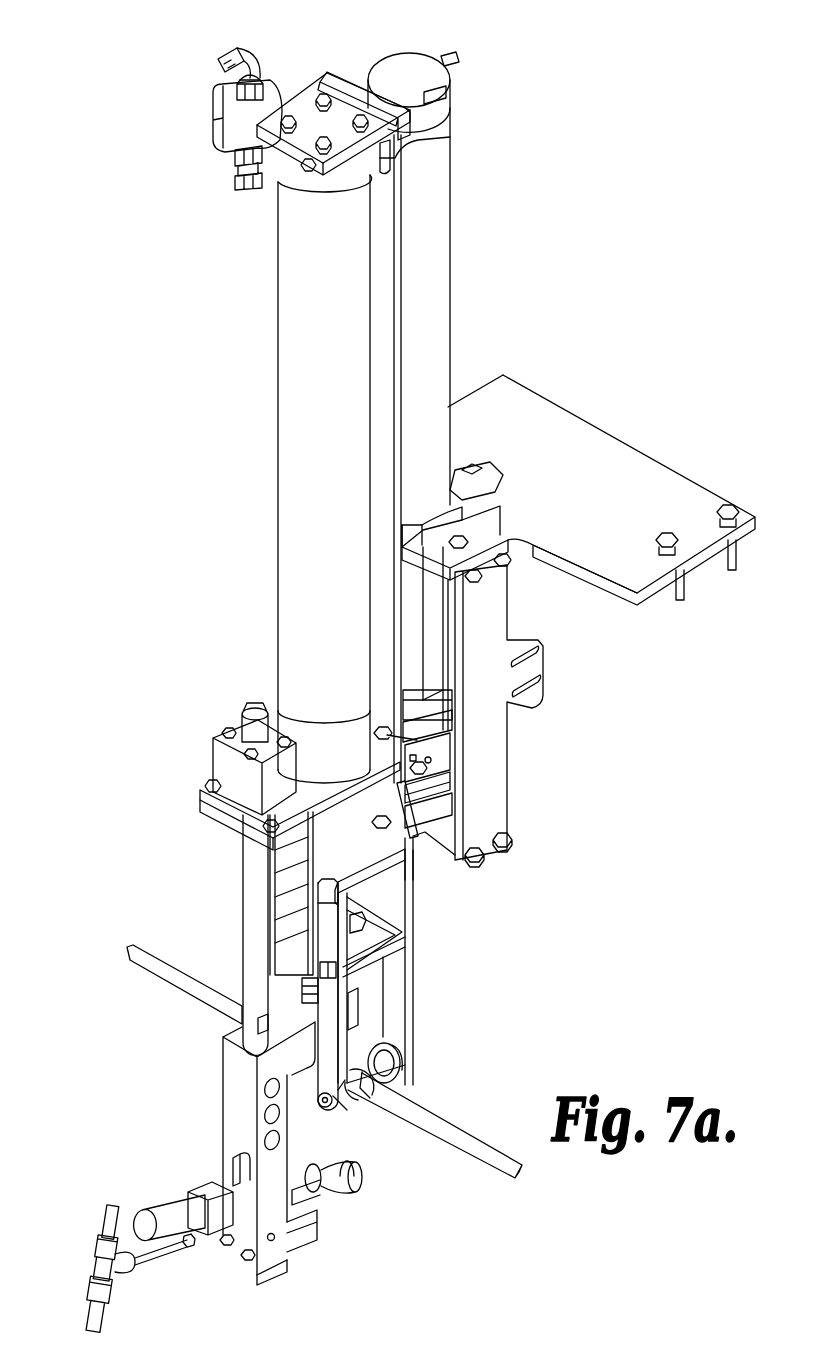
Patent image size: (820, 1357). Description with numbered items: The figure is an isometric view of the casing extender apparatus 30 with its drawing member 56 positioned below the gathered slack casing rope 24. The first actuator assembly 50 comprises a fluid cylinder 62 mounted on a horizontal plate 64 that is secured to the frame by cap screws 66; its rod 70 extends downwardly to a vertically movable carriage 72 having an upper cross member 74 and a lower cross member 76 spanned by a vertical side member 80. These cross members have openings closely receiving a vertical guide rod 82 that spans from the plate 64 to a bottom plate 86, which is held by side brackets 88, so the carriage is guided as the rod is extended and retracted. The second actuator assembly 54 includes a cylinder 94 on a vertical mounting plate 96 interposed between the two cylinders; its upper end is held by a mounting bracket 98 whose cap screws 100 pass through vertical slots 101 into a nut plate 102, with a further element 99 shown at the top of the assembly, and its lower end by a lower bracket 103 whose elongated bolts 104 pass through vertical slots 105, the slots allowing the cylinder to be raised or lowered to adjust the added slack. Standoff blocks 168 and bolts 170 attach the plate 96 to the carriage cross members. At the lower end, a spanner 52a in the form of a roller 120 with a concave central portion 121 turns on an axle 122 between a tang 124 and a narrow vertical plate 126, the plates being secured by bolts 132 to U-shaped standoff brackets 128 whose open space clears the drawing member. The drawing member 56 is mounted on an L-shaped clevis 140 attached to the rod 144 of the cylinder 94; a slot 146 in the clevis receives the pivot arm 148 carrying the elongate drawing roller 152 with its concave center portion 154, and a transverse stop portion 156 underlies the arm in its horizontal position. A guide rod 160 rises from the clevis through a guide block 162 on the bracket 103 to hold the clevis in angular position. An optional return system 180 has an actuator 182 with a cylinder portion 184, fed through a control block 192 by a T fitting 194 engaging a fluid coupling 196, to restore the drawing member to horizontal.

The casing extender apparatus 30 is at (210, 281).
The mounting bracket 98 is at (300, 105).
The nut plate 102 is at (345, 78).
The bolt 99 is at (365, 118).
The cap screws 100 is at (212, 113).
The vertical slots 101 is at (405, 158).
The fluid cylinder 62 is at (440, 205).
The vertical mounting plate 96 is at (390, 270).
The cylinder 94 is at (300, 405).
The first actuator assembly 50 is at (517, 474).
The horizontal plate 64 is at (670, 490).
The cap screws 66 is at (740, 512).
The vertical guide rod 82 is at (445, 600).
The rod 70 is at (415, 610).
The carriage 72 is at (500, 640).
The upper cross member 74 is at (444, 672).
The standoff blocks 168 is at (430, 705).
The vertical side member 80 is at (435, 735).
The bolts 170 is at (430, 762).
The lower cross member 76 is at (455, 820).
The side brackets 88 is at (500, 860).
The bottom plate 86 is at (420, 850).
The vertical slots 105 is at (395, 785).
The guide block 162 is at (213, 752).
The lower bracket 103 is at (190, 786).
The elongated bolts 104 is at (192, 811).
The guide rod 160 is at (248, 882).
The second actuator assembly 54 is at (228, 949).
The rod 144 is at (305, 955).
The U-shaped standoff brackets 128 is at (395, 880).
The tangs 124 is at (410, 945).
The bolts 132 is at (355, 1010).
The rollers 120 is at (410, 1060).
The spanner 52a is at (370, 1098).
The concave central portions 121 is at (372, 1090).
The slack casing rope 24 is at (488, 1148).
The narrow vertical plates 126 is at (335, 1100).
The axles 122 is at (340, 1110).
The clevis 140 is at (222, 1082).
The drawing member 56 is at (207, 1122).
The return system 180 is at (142, 1192).
The slot 146 is at (233, 1167).
The control block 192 is at (200, 1186).
The cylinder portion 184 is at (150, 1216).
The actuator 182 is at (112, 1213).
The T fitting 194 is at (100, 1264).
The fluid coupling 196 is at (188, 1253).
The drawing roller 152 is at (362, 1172).
The concave center portion 154 is at (330, 1200).
The pivot arm 148 is at (312, 1228).
The transverse stop portion 156 is at (306, 1250).